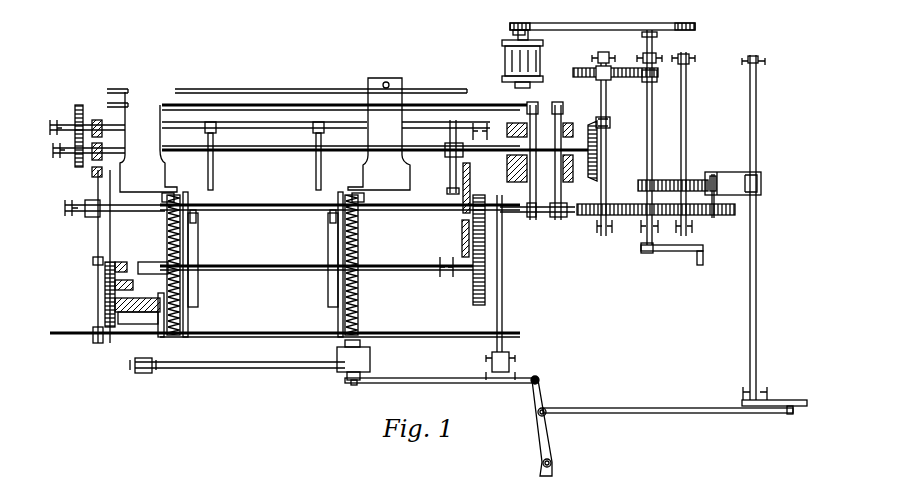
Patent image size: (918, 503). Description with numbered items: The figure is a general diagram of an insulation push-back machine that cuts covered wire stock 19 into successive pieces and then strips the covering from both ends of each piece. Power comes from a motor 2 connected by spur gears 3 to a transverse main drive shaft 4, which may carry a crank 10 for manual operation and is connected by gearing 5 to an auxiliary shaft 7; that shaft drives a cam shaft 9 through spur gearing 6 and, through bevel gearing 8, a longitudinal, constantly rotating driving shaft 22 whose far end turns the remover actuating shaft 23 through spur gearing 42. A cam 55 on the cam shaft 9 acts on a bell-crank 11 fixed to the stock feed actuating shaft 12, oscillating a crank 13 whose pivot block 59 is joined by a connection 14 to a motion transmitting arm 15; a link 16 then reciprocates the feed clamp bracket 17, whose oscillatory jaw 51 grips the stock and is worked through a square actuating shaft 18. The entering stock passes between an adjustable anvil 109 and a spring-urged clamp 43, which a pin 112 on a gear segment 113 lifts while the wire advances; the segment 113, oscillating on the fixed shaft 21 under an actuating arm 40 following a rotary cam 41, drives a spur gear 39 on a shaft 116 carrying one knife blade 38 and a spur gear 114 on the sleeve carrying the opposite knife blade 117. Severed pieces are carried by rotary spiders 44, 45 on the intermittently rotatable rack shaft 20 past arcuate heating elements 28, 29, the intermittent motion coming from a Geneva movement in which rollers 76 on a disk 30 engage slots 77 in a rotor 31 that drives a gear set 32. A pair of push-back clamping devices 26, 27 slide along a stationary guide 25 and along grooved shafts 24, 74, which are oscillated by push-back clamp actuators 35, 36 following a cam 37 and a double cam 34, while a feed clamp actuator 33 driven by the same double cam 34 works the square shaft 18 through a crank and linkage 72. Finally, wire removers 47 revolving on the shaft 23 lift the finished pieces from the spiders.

The motor 2 is at (505, 60).
The spur gears 3 is at (582, 27).
The main drive shaft 4 is at (647, 146).
The gearing 5 is at (610, 80).
The spur gearing 6 is at (638, 205).
The auxiliary drive shaft 7 is at (600, 97).
The bevel gearing 8 is at (610, 125).
The cam shaft 9 is at (688, 132).
The crank 10 is at (675, 252).
The bell-crank 11 is at (730, 162).
The stock feed actuating shaft 12 is at (758, 137).
The crank 13 is at (795, 400).
The connection 14 is at (628, 410).
The motion transmitting arm 15 is at (542, 436).
The link 16 is at (453, 380).
The feed clamp bracket 17 is at (360, 372).
The square actuating bar or shaft 18 is at (262, 364).
The wire stock 19 is at (286, 320).
The rack shaft 20 is at (285, 265).
The fixed shaft 21 is at (278, 206).
The driving shaft 22 is at (283, 151).
The remover actuating shaft 23 is at (278, 124).
The grooved shaft 24 is at (542, 110).
The stationary guide 25 is at (238, 92).
The push-back clamping device 26 is at (141, 150).
The push-back clamping device 27 is at (365, 190).
The heating element 28 is at (170, 233).
The heating element 29 is at (358, 236).
The disk 30 is at (450, 165).
The rotor 31 is at (460, 236).
The gear set 32 is at (473, 300).
The feed clamp actuator 33 is at (503, 272).
The double cam 34 is at (510, 125).
The push-back clamp actuator 35 is at (562, 215).
The push-back clamp actuator 36 is at (520, 208).
The cam 37 is at (593, 180).
The knife blade 38 is at (148, 325).
The spur gear 39 is at (105, 283).
The actuating arm 40 is at (100, 240).
The rotary cam 41 is at (90, 175).
The spur gearing 42 is at (72, 112).
The clamp 43 is at (98, 307).
The rotary carrier or spider 44 is at (198, 295).
The rotary carrier or spider 45 is at (328, 295).
The wire remover 47 is at (208, 173).
The oscillatory jaw 51 is at (714, 216).
The cam 55 is at (640, 182).
The pivot block 59 is at (793, 414).
The crank and linkage 72 is at (508, 342).
The grooved shaft 74 is at (303, 103).
The rollers 76 is at (445, 140).
The slots 77 is at (468, 177).
The anvil 109 is at (97, 343).
The pin 112 is at (93, 262).
The gear segment 113 is at (125, 268).
The spur gear 114 is at (133, 285).
The shaft 116 is at (147, 305).
The knife blade 117 is at (155, 318).